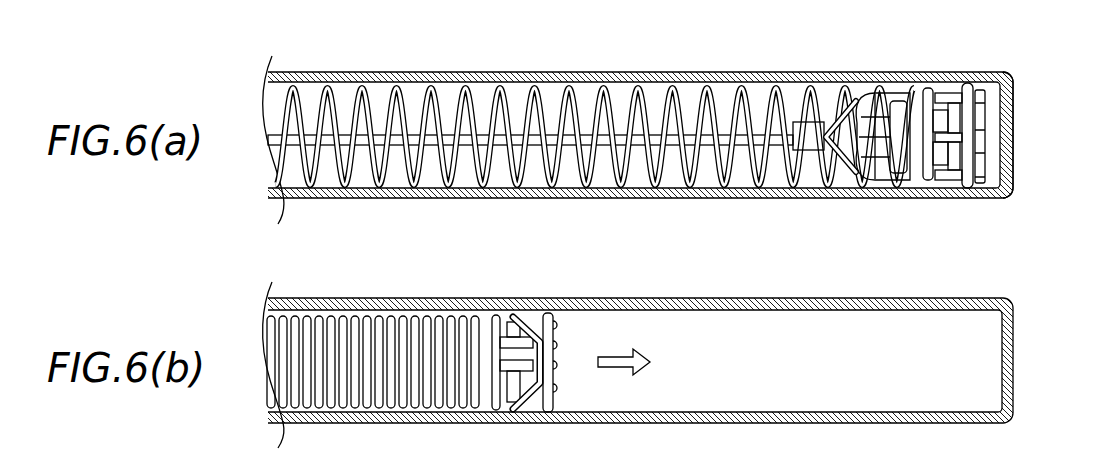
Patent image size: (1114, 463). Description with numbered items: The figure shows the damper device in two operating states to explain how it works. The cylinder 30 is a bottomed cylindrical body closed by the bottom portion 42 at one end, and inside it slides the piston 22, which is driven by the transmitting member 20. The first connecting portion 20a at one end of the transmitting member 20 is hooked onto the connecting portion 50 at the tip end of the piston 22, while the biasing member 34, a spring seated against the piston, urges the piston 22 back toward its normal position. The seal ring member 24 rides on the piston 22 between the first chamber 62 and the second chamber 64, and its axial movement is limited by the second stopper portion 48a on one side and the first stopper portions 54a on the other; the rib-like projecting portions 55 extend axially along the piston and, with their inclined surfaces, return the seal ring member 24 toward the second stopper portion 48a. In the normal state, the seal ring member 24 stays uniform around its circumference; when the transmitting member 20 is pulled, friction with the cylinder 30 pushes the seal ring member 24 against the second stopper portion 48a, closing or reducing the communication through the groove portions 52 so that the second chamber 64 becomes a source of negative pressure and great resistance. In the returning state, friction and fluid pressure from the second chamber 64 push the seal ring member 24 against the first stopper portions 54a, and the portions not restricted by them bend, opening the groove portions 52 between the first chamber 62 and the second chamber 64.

In FIG. 6A, the transmitting member 20 is at (637, 133).
In FIG. 6A, the first connecting portion 20a is at (860, 112).
In FIG. 6A, the piston 22 is at (992, 126).
In FIG. 6B, the piston 22 is at (706, 344).
In FIG. 6A, the seal ring member 24 is at (967, 87).
In FIG. 6B, the seal ring member 24 is at (522, 318).
In FIG. 6A, the cylinder 30 is at (766, 74).
In FIG. 6A, the biasing member 34 is at (667, 98).
In FIG. 6B, the biasing member 34 is at (396, 318).
In FIG. 6A, the bottom portion 42 is at (1015, 86).
In FIG. 6B, the bottom portion 42 is at (1014, 321).
In FIG. 6A, the second stopper portion 48a is at (986, 114).
In FIG. 6B, the second stopper portion 48a is at (548, 318).
In FIG. 6A, the connecting portion 50 is at (893, 110).
In FIG. 6A, the groove portions 52 is at (928, 134).
In FIG. 6B, the groove portions 52 is at (488, 412).
In FIG. 6A, the first stopper portions 54a is at (937, 178).
In FIG. 6B, the first stopper portions 54a is at (545, 365).
In FIG. 6A, the projecting portions 55 is at (941, 94).
In FIG. 6B, the projecting portions 55 is at (506, 320).
In FIG. 6A, the first chamber 62 is at (533, 100).
In FIG. 6B, the first chamber 62 is at (428, 321).
In FIG. 6A, the second chamber 64 is at (994, 91).
In FIG. 6B, the second chamber 64 is at (786, 338).